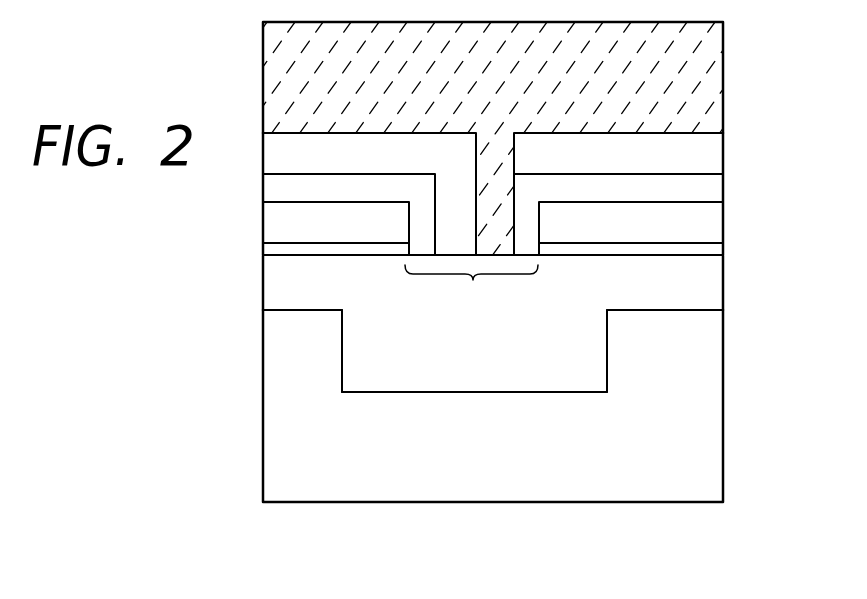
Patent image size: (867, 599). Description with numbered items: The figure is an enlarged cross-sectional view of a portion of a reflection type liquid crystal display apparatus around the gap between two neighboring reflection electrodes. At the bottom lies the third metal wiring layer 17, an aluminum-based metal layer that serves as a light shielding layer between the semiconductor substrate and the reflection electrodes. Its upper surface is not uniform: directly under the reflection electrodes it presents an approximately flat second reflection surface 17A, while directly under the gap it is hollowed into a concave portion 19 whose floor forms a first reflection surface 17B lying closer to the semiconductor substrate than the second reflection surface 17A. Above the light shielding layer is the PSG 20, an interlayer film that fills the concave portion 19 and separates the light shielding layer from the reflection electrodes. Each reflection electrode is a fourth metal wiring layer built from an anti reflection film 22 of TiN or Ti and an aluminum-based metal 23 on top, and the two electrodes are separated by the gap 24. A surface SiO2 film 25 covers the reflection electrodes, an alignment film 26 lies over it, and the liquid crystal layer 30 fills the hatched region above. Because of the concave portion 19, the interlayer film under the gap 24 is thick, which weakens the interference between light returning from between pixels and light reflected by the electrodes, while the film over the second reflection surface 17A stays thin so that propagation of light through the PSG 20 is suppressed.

The third metal wiring layer 17 is at (708, 403).
The second reflection surface 17A is at (663, 311).
The first reflection surface 17B is at (570, 392).
The concave portion 19 is at (480, 375).
The PSG 20 is at (709, 285).
The anti reflection film 22 is at (708, 247).
The aluminum based metal 23 is at (709, 224).
The gap between the reflection electrodes 24 is at (471, 289).
The surface SiO2 film 25 is at (709, 188).
The alignment film 26 is at (709, 148).
The liquid crystal layer 30 is at (704, 43).